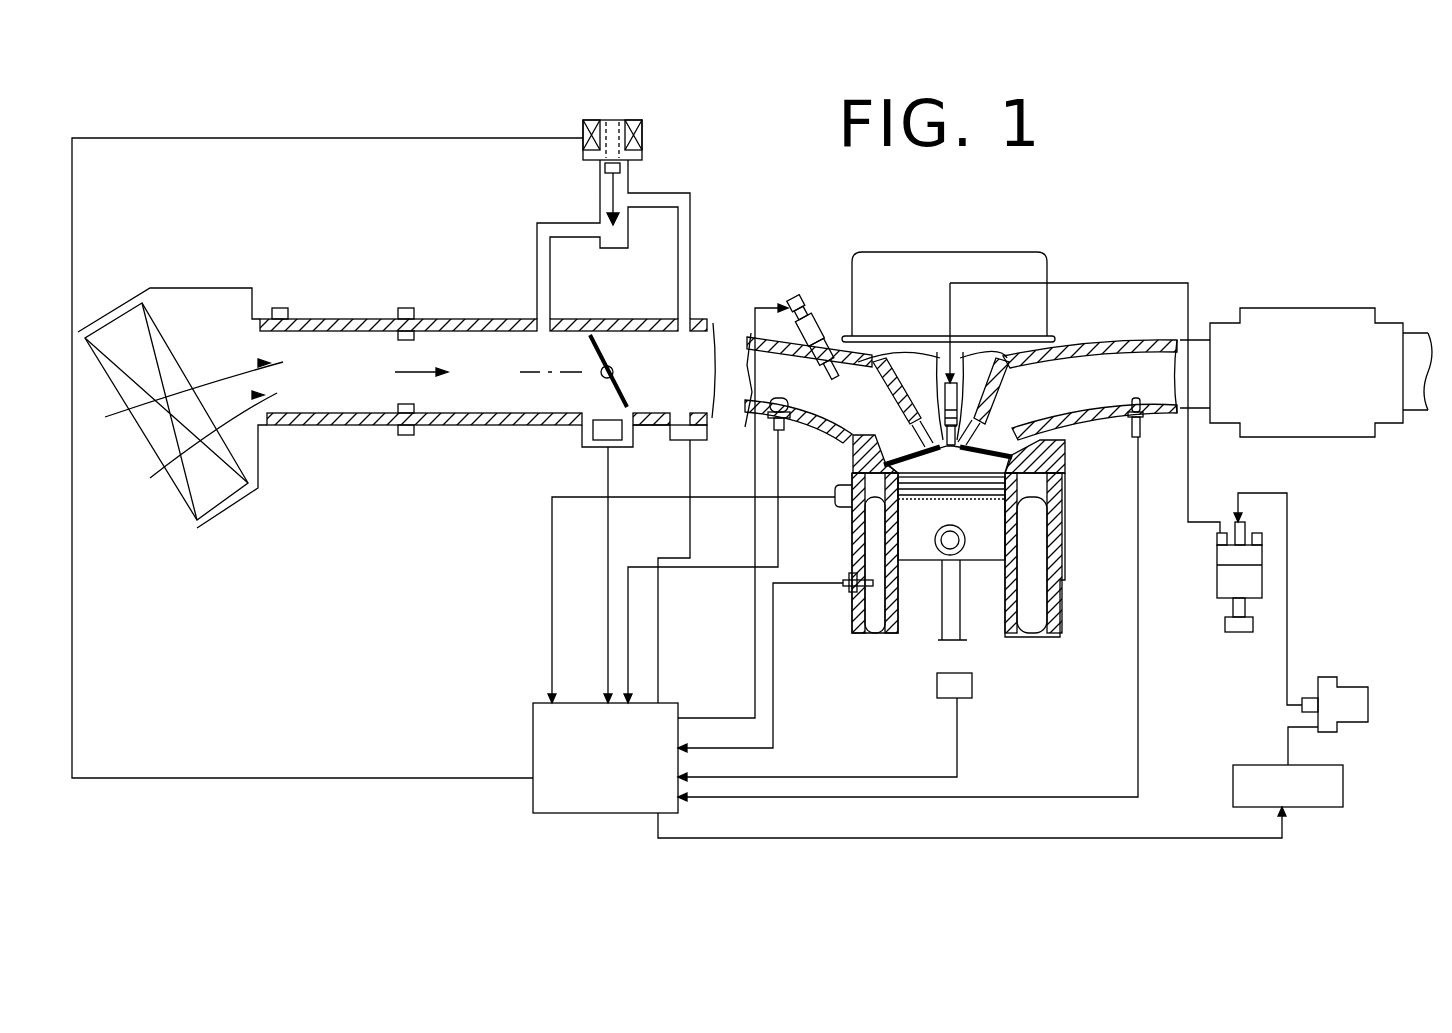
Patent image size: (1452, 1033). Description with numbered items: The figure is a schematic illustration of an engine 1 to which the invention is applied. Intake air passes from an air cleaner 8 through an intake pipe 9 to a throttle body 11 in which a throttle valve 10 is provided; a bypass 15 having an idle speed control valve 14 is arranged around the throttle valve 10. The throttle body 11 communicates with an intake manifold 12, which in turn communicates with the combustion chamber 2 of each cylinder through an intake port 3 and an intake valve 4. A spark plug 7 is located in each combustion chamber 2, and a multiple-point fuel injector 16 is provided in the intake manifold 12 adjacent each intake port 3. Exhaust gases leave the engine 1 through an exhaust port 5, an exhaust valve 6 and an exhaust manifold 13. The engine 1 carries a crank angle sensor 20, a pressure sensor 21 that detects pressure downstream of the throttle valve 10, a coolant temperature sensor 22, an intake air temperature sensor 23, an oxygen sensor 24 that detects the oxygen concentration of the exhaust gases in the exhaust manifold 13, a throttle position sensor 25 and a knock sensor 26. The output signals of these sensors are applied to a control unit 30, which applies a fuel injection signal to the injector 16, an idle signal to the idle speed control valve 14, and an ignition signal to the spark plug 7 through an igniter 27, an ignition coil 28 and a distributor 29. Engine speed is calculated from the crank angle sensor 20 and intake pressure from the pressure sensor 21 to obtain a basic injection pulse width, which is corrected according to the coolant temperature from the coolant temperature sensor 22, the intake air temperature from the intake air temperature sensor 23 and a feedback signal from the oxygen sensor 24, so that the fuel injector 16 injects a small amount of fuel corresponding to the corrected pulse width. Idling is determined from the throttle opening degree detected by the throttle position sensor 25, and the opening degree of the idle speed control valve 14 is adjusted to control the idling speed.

The engine 1 is at (1066, 503).
The combustion chamber 2 is at (1036, 455).
The intake port 3 is at (853, 465).
The intake valve 4 is at (897, 423).
The exhaust port 5 is at (1052, 437).
The exhaust valve 6 is at (1000, 427).
The spark plug 7 is at (940, 375).
The air cleaner 8 is at (226, 506).
The intake pipe 9 is at (347, 421).
The throttle valve 10 is at (595, 337).
The throttle body 11 is at (651, 428).
The intake manifold 12 is at (817, 411).
The exhaust manifold 13 is at (1112, 340).
The idle speed control (ISC) valve 14 is at (630, 177).
The bypass 15 is at (692, 207).
The multiple-point fuel injector 16 is at (807, 304).
The crank angle sensor 20 is at (975, 686).
The pressure sensor 21 is at (691, 441).
The coolant temperature sensor 22 is at (847, 574).
The intake air temperature sensor 23 is at (721, 550).
The O2-sensor 24 is at (1142, 420).
The throttle position sensor 25 is at (597, 445).
The knock sensor 26 is at (835, 500).
The igniter 27 is at (1345, 800).
The ignition coil 28 is at (1356, 682).
The distributor 29 is at (1215, 576).
The control unit 30 is at (645, 815).